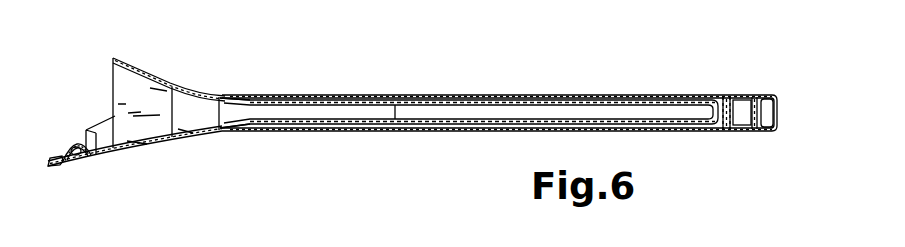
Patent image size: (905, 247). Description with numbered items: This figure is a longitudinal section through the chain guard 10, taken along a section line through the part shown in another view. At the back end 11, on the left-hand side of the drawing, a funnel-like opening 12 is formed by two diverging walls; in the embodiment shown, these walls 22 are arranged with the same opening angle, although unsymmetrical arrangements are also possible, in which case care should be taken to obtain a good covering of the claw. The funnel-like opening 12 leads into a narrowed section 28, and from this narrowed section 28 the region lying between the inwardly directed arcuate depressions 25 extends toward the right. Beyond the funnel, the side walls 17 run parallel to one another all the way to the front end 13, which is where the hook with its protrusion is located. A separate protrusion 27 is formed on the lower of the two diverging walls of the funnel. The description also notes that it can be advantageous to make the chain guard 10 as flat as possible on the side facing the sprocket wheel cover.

The injection device 10 is at (482, 77).
The back end 11 is at (214, 86).
The funnel-like opening 12 is at (106, 100).
The front end 13 is at (763, 88).
The side walls 17 is at (391, 94).
The wall 22 is at (152, 78).
The inwardly directed arcuate depressions 25 is at (282, 100).
The protrusion 27 is at (74, 147).
The narrowed section 28 is at (212, 118).